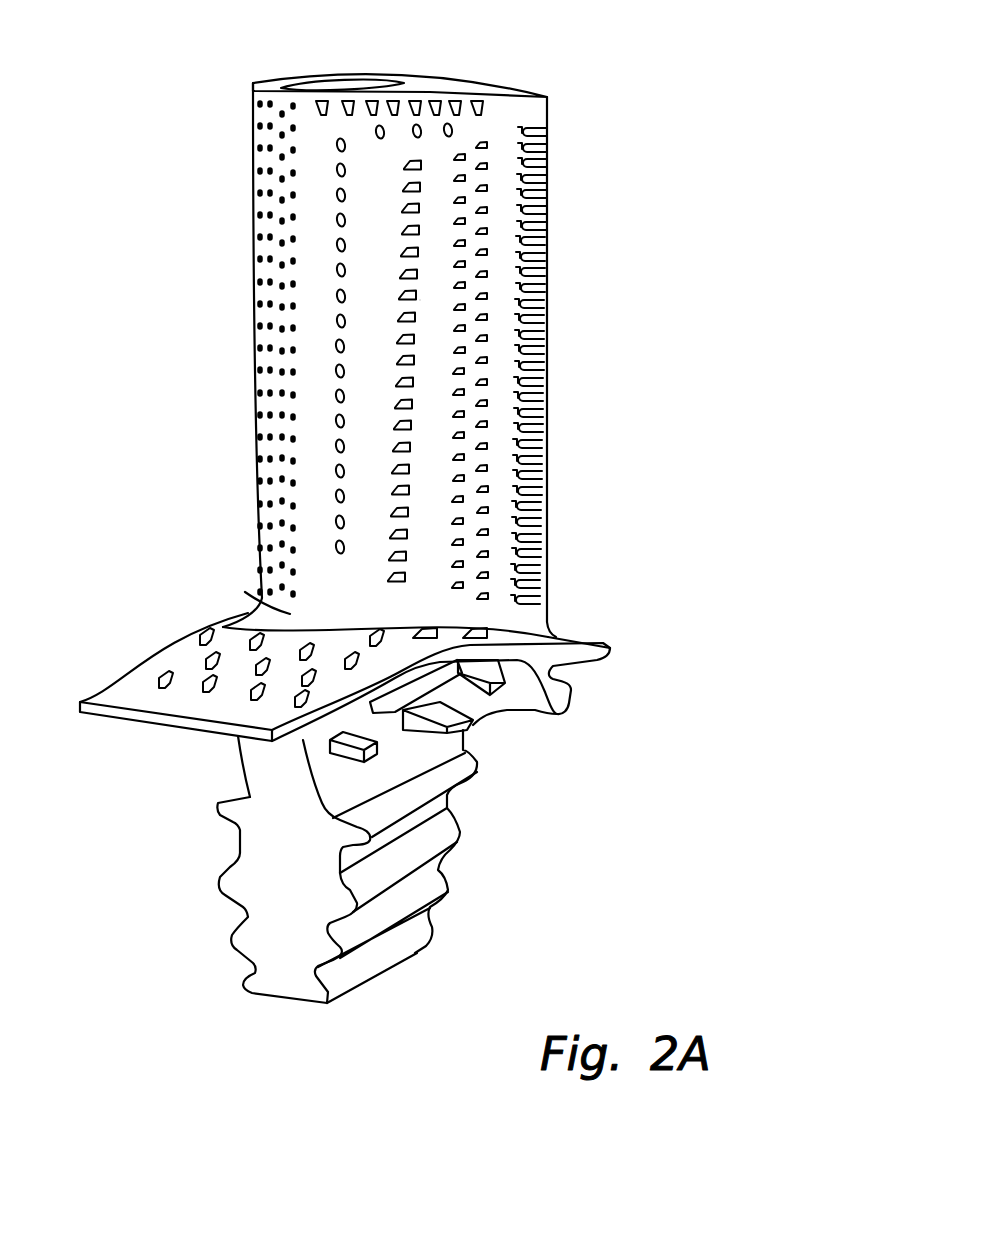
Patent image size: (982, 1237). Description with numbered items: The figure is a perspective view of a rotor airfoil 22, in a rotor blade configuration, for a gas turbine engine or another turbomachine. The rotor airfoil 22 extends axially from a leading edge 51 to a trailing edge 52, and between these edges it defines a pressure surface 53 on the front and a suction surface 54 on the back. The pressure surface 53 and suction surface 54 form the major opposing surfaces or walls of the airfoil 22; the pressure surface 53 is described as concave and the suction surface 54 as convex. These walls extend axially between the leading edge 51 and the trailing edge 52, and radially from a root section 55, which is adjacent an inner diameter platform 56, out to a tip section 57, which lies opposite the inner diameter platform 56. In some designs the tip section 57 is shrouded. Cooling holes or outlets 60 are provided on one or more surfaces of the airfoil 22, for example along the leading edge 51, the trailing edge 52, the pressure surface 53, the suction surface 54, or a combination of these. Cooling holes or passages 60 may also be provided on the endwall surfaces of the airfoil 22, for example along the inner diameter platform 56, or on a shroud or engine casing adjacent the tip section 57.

The rotor airfoil 22 is at (128, 83).
The leading edge 51 is at (253, 252).
The trailing edge 52 is at (547, 368).
The pressure surface 53 is at (356, 384).
The suction surface 54 is at (505, 74).
The root section 55 is at (258, 603).
The inner diameter platform 56 is at (157, 653).
The tip section 57 is at (430, 92).
The cooling holes 60 is at (547, 194).